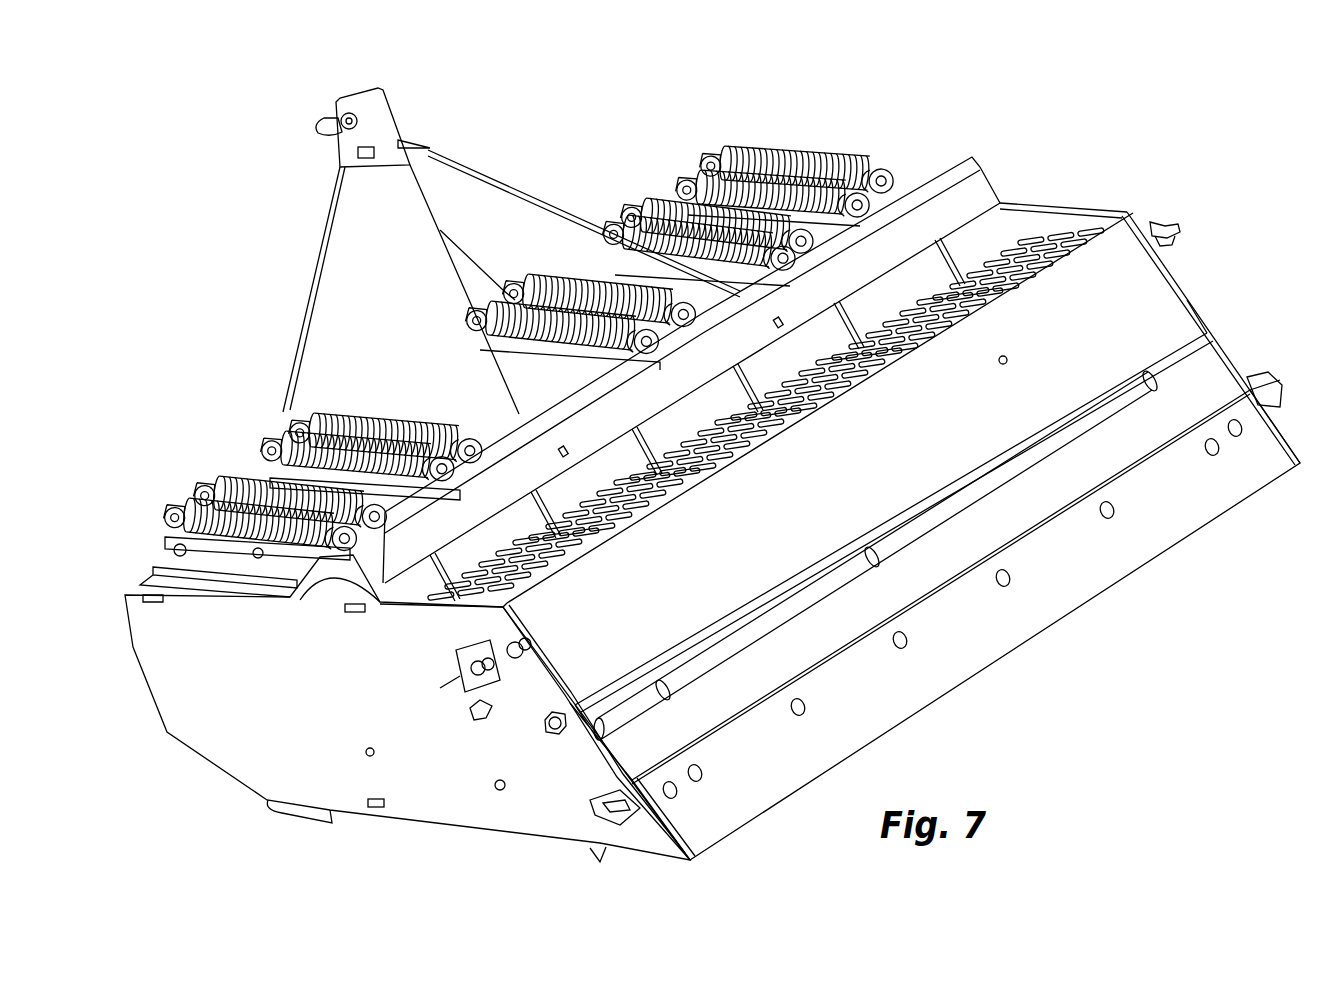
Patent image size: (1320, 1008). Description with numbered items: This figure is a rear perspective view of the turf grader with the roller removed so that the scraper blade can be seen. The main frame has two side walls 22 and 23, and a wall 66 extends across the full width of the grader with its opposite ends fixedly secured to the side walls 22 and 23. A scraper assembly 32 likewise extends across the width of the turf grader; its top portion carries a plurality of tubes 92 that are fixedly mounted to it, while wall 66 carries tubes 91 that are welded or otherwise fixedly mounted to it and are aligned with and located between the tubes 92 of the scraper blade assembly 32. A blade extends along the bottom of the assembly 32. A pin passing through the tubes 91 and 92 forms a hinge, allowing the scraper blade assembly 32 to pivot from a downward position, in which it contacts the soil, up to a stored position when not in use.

The side wall 22 is at (462, 798).
The side wall 23 is at (1033, 228).
The scraper blade assembly 32 is at (910, 582).
The wall 66 is at (1130, 288).
The tubes 91 is at (1033, 463).
The tubes 92 is at (1160, 362).